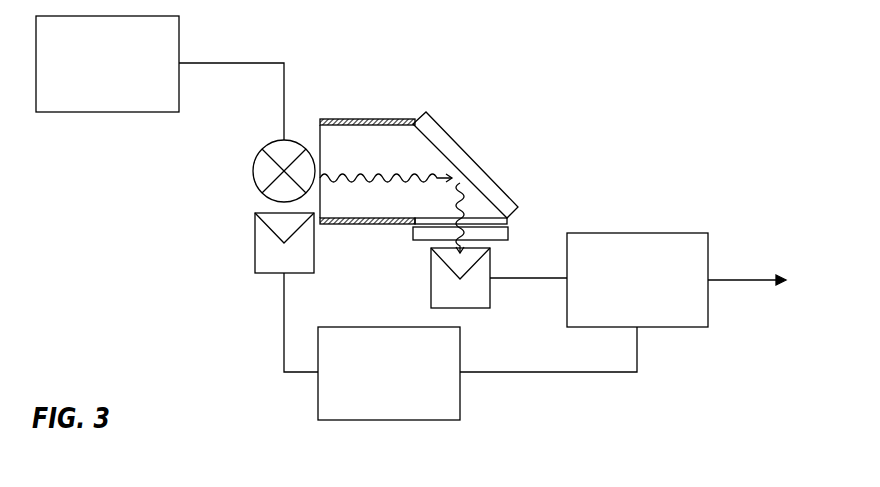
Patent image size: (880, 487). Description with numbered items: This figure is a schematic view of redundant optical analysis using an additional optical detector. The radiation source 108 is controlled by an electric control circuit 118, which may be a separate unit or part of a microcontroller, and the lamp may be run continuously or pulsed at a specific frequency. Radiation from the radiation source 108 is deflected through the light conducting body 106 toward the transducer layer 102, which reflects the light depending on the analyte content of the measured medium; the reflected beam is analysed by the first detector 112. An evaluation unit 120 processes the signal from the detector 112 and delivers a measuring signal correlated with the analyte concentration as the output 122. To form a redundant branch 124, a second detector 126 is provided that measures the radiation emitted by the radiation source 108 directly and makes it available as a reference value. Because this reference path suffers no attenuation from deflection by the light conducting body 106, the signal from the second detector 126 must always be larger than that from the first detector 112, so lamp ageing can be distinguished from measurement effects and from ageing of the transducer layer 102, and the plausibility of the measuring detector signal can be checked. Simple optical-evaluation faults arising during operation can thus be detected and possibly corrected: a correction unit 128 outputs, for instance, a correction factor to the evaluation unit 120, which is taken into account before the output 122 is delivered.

The transducer layer 102 is at (485, 175).
The light conducting body 106 is at (413, 186).
The radiation source 108 is at (262, 159).
The detector 112 is at (431, 263).
The electric control circuit 118 is at (160, 78).
The evaluation unit 120 is at (584, 302).
The output 122 is at (718, 278).
The redundant branch 124 is at (285, 348).
The second detector 126 is at (255, 242).
The correction unit 128 is at (389, 373).